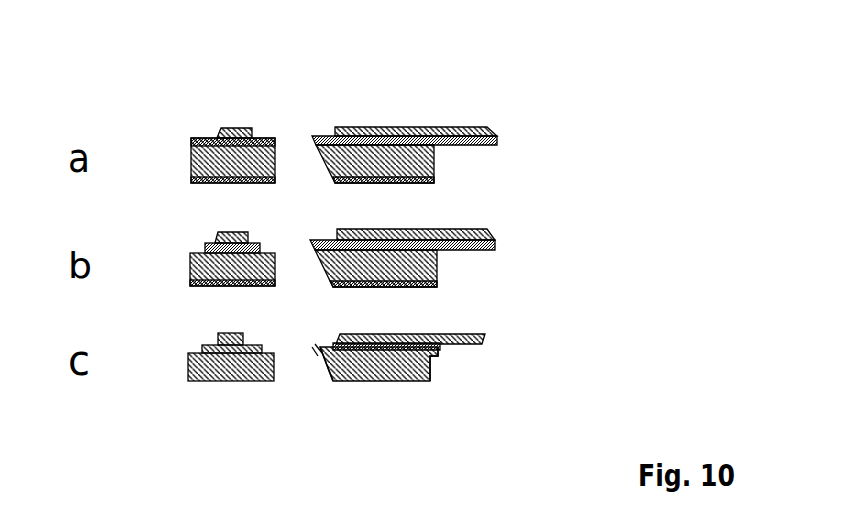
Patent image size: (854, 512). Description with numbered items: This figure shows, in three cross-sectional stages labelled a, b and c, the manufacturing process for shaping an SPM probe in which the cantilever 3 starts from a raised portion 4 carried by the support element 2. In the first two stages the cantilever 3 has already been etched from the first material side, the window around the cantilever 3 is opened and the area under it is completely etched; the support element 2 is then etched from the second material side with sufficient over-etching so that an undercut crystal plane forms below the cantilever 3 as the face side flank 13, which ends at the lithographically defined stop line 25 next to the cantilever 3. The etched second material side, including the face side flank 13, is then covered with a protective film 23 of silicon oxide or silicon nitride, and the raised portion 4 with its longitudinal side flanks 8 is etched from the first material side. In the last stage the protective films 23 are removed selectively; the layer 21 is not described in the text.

The support element 2 is at (384, 368).
The cantilever 3 is at (458, 340).
The raised portion 4 is at (330, 348).
The longitudinal side flanks 8 is at (201, 249).
The face side flank 13 is at (432, 363).
The bonding layer 21 is at (470, 146).
The protective film 23 is at (434, 128).
The stop line 25 is at (448, 353).